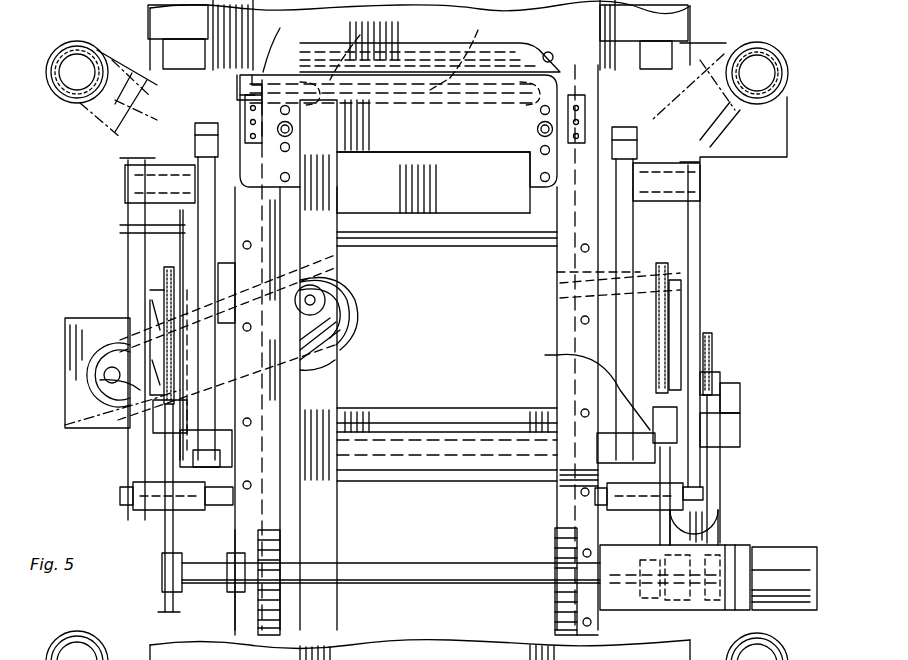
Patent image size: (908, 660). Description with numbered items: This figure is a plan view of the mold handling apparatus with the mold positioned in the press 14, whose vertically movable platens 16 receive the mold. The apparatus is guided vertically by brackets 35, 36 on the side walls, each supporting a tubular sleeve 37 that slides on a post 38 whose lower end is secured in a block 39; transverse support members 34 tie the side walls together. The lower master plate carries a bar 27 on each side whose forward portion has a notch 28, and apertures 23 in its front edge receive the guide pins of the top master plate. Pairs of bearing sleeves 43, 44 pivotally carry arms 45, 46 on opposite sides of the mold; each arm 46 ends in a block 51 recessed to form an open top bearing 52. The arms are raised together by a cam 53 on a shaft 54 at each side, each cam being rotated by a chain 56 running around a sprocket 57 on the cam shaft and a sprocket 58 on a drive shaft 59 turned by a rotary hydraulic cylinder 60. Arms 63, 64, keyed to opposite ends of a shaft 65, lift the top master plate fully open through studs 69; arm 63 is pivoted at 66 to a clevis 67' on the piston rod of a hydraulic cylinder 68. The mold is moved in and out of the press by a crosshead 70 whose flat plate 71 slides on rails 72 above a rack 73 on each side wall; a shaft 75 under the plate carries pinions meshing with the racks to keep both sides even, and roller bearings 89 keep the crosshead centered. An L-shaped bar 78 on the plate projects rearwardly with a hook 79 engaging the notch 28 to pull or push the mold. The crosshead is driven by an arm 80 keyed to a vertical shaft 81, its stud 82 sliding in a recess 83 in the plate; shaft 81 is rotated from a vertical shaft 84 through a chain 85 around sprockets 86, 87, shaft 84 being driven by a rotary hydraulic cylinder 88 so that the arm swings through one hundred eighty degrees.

The press 14 is at (700, 22).
The platens 16 is at (688, 86).
The apertures 23 is at (550, 55).
The bar 27 is at (235, 82).
The notch 28 is at (240, 94).
The transverse support members 34 is at (418, 260).
The bracket 35 is at (118, 105).
The bracket 36 is at (715, 122).
The tubular sleeve 37 is at (98, 48).
The post 38 is at (70, 66).
The block 39 is at (782, 134).
The bearing sleeves 43 is at (125, 200).
The bearing sleeves 44 is at (125, 440).
The arm 45 is at (185, 253).
The arm 46 is at (200, 235).
The block 51 is at (210, 125).
The open top bearing 52 is at (627, 112).
The cam 53 is at (557, 275).
The shafts 54 is at (240, 262).
The chain 56 is at (165, 535).
The sprocket 57 is at (160, 270).
The sprocket 58 is at (163, 605).
The drive shaft 59 is at (365, 560).
The rotary hydraulic cylinder 60 is at (637, 610).
The arm 63 is at (135, 250).
The arm 64 is at (700, 278).
The shaft 65 is at (448, 245).
The pivot 66 is at (713, 350).
The clevis 67' is at (711, 398).
The hydraulic cylinder 68 is at (720, 520).
The stud 69 is at (212, 512).
The crosshead 70 is at (492, 160).
The flat plate 71 is at (373, 145).
The rails 72 is at (555, 492).
The rack 73 is at (295, 545).
The shaft 75 is at (422, 157).
The L-shaped bar 78 is at (335, 45).
The hook 79 is at (272, 39).
The arm 80 is at (335, 255).
The vertical shaft 81 is at (340, 325).
The stud 82 is at (361, 43).
The recess 83 is at (460, 48).
The vertical shaft 84 is at (100, 382).
The chain 85 is at (105, 372).
The sprocket 86 is at (320, 368).
The sprocket 87 is at (65, 424).
The rotary hydraulic cylinder 88 is at (65, 338).
The roller bearings 89 is at (440, 108).